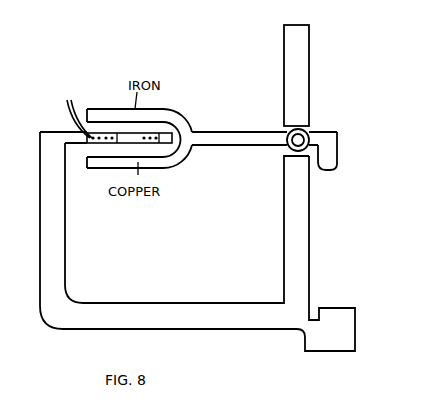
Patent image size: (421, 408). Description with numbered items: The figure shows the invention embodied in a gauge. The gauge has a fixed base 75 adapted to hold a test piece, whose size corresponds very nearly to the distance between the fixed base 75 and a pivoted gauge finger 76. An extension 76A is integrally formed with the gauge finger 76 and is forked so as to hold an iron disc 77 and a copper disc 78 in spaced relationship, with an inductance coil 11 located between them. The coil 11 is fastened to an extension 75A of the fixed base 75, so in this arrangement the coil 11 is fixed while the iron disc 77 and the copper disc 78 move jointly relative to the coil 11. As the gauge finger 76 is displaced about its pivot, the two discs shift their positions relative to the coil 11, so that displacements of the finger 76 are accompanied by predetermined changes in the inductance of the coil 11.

The fixed base 75 is at (337, 318).
The extension of fixed base 75A is at (77, 309).
The pivoted gauge finger 76 is at (330, 162).
The extension 76A is at (230, 132).
The iron disc 77 is at (88, 108).
The copper disc 78 is at (95, 162).
The inductance coil 11 is at (158, 138).